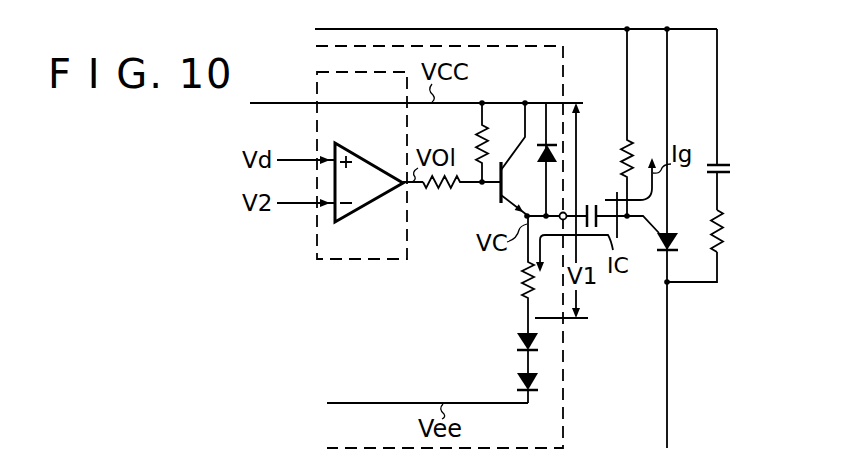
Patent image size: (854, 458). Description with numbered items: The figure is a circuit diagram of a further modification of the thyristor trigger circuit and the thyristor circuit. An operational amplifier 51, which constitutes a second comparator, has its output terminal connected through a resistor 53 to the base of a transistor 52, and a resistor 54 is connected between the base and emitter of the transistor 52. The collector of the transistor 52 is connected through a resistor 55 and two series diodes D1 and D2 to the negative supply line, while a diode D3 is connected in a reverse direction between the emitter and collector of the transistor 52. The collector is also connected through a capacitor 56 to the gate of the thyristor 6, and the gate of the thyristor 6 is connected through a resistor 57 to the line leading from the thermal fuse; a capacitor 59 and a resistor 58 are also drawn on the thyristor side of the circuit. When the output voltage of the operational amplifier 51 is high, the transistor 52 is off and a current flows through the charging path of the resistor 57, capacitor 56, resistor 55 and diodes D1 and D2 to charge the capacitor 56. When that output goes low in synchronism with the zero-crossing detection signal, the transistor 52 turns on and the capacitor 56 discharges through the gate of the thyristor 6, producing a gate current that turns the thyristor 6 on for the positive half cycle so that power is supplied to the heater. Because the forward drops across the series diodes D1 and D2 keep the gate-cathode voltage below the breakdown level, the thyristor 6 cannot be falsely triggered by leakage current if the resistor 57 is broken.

The operational amplifier 51 is at (366, 154).
The transistor 52 is at (495, 196).
The resistor 53 is at (441, 191).
The resistor 54 is at (475, 150).
The resistor 55 is at (522, 276).
The capacitor 56 is at (590, 202).
The resistor 57 is at (620, 152).
The resistor 58 is at (722, 234).
The capacitor 59 is at (721, 168).
The thyristor 6 is at (660, 252).
The diode D1 is at (518, 351).
The diode D2 is at (520, 390).
The diode D3 is at (540, 128).